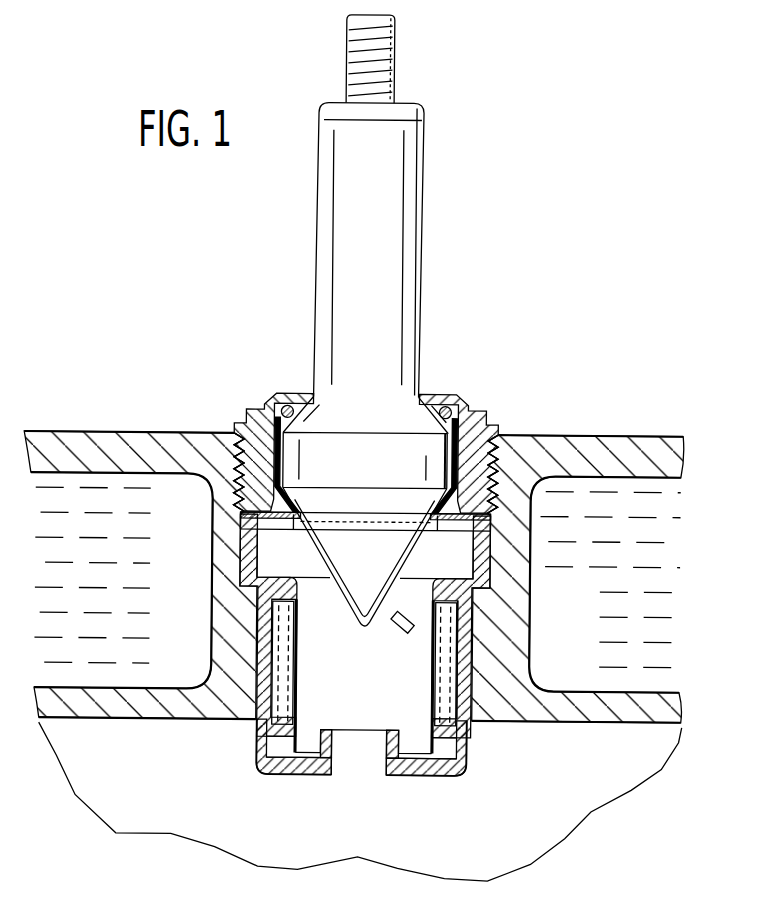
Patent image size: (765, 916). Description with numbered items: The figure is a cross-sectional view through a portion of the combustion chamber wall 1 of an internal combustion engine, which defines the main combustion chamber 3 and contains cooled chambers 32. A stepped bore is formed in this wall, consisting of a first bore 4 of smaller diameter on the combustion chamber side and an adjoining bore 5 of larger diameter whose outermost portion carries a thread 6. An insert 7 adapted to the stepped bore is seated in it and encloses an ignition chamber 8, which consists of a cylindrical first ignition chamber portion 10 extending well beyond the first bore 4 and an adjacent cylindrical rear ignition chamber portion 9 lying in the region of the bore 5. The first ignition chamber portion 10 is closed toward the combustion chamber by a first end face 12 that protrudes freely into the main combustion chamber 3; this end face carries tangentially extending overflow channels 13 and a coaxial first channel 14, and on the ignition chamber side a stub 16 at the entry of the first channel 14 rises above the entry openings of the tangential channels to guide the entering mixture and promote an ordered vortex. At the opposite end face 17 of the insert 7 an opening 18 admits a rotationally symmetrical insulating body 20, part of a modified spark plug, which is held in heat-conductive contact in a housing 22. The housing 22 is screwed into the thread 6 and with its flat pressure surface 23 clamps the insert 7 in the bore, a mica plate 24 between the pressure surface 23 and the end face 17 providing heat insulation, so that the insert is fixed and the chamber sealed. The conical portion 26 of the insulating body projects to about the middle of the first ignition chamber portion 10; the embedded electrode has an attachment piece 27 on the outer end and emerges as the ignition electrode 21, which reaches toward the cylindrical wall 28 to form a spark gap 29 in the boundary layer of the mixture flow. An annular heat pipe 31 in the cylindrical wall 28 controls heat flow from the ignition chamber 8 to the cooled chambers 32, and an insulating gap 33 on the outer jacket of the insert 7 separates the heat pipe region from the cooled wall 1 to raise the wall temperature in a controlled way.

The combustion chamber wall 1 is at (635, 455).
The main combustion chamber 3 is at (359, 802).
The first bore 4 is at (467, 658).
The bore 5 is at (470, 568).
The thread 6 is at (508, 428).
The insert 7 is at (268, 775).
The ignition chamber 8 is at (363, 676).
The rear ignition chamber portion 9 is at (270, 560).
The first ignition chamber portion 10 is at (405, 683).
The first end face 12 is at (410, 768).
The channels 13 is at (270, 750).
The first channel 14 is at (368, 745).
The stub 16 is at (338, 745).
The end face 17 is at (480, 536).
The opening 18 is at (250, 537).
The insulating body 20 is at (404, 217).
The ignition electrode 21 is at (395, 626).
The housing 22 is at (254, 432).
The pressure surface 23 is at (470, 520).
The mica plate 24 is at (242, 512).
The portion of the insulating body 26 is at (366, 529).
The attachment piece 27 is at (372, 48).
The cylindrical wall 28 is at (300, 612).
The spark gap 29 is at (440, 633).
The annular heat pipe 31 is at (282, 636).
The cooled chambers 32 is at (88, 500).
The insulating gap 33 is at (258, 660).